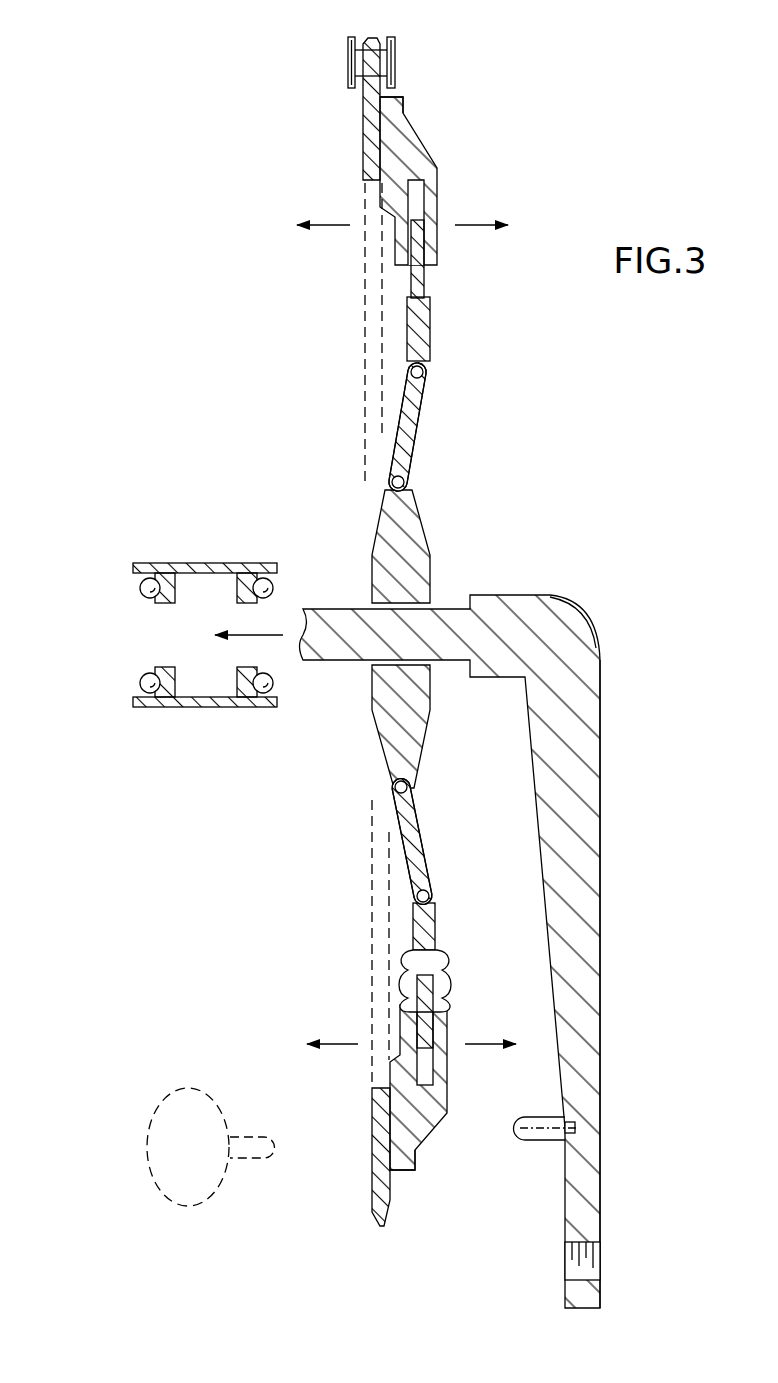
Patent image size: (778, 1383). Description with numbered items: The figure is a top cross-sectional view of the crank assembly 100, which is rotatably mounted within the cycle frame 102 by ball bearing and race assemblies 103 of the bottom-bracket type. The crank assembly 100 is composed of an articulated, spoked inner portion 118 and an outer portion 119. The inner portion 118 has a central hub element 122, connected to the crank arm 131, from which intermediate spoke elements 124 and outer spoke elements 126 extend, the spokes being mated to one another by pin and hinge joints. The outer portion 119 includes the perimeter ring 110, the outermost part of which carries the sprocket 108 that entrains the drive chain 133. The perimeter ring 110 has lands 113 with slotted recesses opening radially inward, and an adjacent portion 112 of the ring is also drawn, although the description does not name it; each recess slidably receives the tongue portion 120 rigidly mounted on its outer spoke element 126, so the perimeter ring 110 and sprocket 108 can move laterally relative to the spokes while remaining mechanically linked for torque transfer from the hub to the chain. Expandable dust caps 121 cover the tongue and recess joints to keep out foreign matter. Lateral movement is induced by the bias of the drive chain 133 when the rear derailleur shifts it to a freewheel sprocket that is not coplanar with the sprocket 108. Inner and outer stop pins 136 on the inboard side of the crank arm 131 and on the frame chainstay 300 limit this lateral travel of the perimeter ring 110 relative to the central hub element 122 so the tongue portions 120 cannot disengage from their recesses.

The crank assembly 100 is at (660, 137).
The cycle frame 102 is at (205, 563).
The ball bearing and race assemblies 103 is at (138, 606).
The sprocket 108 is at (363, 133).
The perimeter ring 110 is at (462, 181).
The housing step 112 is at (383, 120).
The lands 113 is at (420, 145).
The inner portion 118 is at (559, 556).
The outer portion 119 is at (304, 95).
The tongue portion 120 is at (425, 280).
The dust caps 121 is at (452, 983).
The central hub element 122 is at (371, 585).
The intermediate spoke elements 124 is at (420, 432).
The outer spoke elements 126 is at (454, 333).
The crank arm 131 is at (603, 883).
The drive chain 133 is at (345, 60).
The stop pins 136 is at (537, 1142).
The frame chainstay 300 is at (160, 1103).